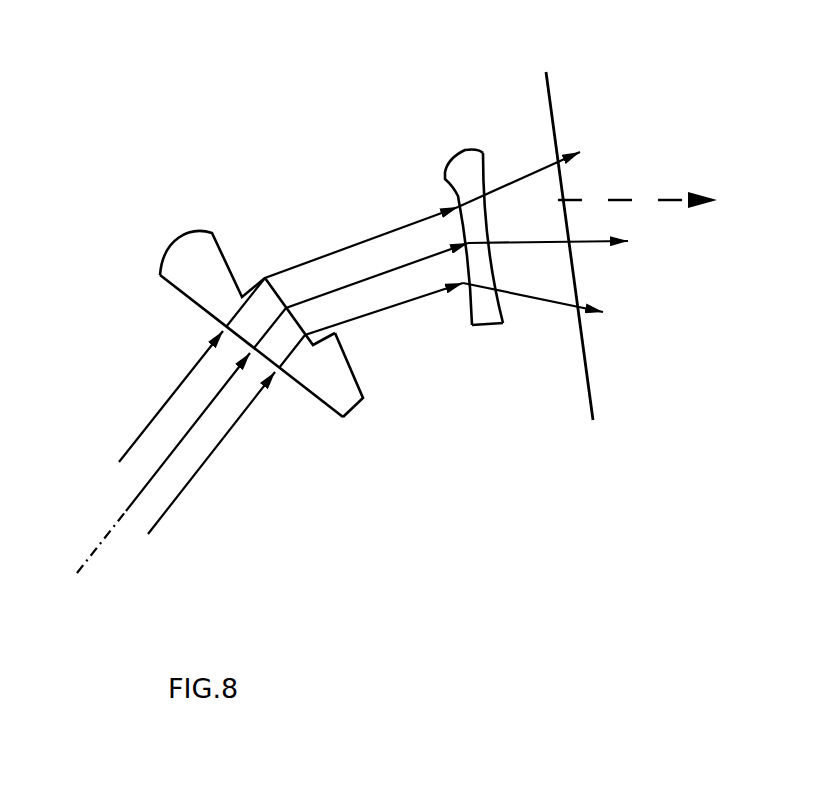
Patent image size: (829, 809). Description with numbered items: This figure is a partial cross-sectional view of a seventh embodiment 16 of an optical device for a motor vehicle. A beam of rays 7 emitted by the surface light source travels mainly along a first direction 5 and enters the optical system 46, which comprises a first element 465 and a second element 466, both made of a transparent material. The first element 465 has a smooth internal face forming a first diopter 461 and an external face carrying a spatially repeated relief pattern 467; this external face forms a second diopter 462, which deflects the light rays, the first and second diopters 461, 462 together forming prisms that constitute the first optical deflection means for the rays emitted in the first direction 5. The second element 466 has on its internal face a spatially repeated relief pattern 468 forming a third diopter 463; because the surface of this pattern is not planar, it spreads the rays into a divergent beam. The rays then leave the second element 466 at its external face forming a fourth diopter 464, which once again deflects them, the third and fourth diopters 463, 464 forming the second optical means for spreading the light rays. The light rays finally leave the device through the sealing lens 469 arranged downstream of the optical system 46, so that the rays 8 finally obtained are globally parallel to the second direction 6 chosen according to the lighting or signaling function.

The seventh embodiment 16 is at (137, 105).
The optical system 46 is at (328, 157).
The first diopter 461 is at (300, 385).
The second diopter 462 is at (228, 260).
The third diopter 463 is at (445, 190).
The fourth diopter 464 is at (503, 303).
The first element 465 is at (333, 388).
The second element 466 is at (478, 290).
The relief pattern 467 is at (310, 317).
The relief pattern 468 is at (465, 260).
The sealing lens 469 is at (552, 107).
The first direction 5 is at (108, 540).
The second direction 6 is at (610, 200).
The beam of rays 7 is at (195, 474).
The rays 8 is at (527, 240).